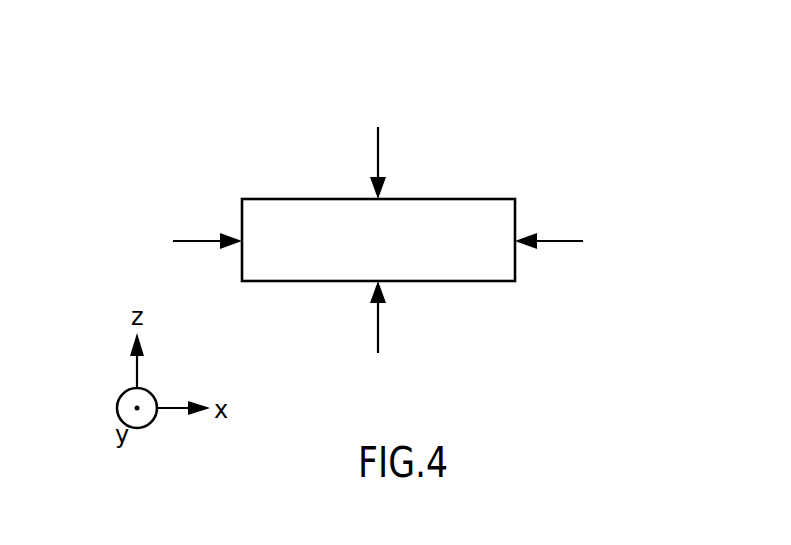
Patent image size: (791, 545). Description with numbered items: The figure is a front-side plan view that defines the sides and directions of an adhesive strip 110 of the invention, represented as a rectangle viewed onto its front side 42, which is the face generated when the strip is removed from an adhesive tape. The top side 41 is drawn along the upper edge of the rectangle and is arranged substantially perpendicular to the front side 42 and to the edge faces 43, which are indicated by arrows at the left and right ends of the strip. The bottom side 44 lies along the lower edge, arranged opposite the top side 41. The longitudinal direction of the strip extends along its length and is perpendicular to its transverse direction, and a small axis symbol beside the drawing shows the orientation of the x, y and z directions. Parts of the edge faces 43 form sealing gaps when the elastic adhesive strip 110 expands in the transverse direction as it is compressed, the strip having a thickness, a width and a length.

The adhesive strip 110 is at (222, 161).
The top side 41 is at (378, 146).
The front side 42 is at (317, 252).
The edge faces 43 is at (379, 240).
The bottom side 44 is at (380, 335).